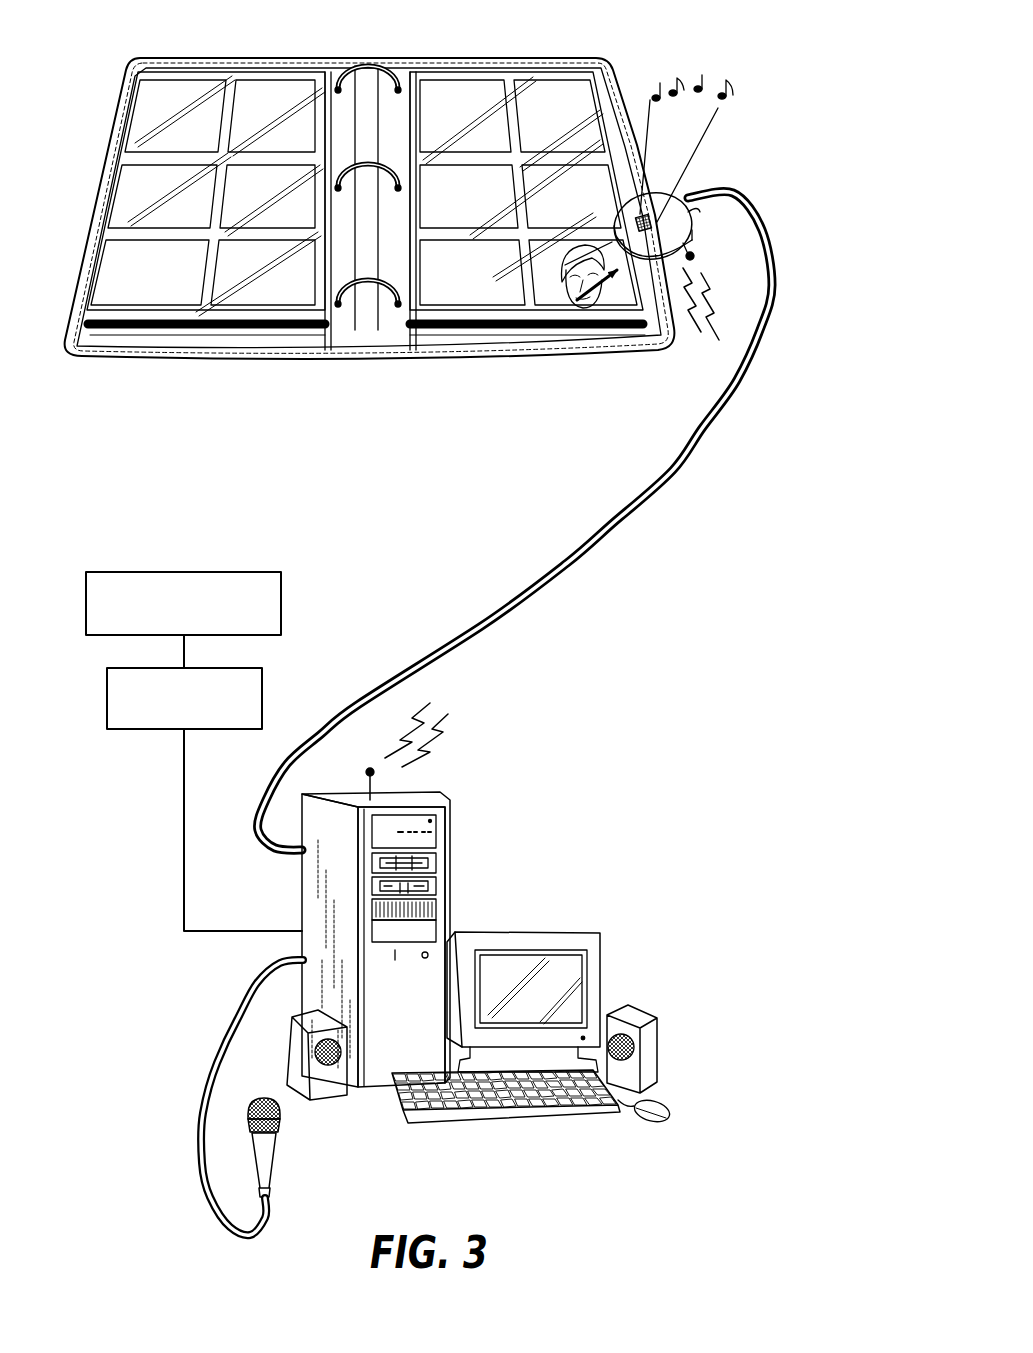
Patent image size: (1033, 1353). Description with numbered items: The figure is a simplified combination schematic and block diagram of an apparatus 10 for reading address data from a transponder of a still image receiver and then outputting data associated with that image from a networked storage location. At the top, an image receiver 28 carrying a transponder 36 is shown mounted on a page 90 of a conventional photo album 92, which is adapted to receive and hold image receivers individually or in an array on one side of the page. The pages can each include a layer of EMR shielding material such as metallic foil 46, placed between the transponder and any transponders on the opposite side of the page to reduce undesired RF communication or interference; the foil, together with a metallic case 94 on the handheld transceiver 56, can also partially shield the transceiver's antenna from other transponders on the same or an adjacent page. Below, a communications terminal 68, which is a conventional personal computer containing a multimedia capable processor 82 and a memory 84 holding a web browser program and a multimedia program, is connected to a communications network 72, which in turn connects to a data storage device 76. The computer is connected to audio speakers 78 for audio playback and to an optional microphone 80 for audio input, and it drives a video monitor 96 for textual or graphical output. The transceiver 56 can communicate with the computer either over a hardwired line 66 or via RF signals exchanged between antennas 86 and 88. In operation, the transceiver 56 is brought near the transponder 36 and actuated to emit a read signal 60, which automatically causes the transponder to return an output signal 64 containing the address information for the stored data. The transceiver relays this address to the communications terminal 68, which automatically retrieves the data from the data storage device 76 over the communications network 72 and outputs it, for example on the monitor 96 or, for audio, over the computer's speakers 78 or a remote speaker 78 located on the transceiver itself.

The apparatus 10 is at (650, 1198).
The image receiver 28 is at (556, 332).
The transponder 36 is at (556, 332).
The metallic foil 46 is at (232, 82).
The transceiver 56 is at (692, 207).
The read signal 60 is at (538, 325).
The output signal 64 is at (567, 247).
The hardwired line 66 is at (676, 474).
The communications terminal 68 is at (567, 838).
The communications network 72 is at (107, 700).
The data storage device 76 is at (128, 572).
The audio speakers 78 is at (682, 186).
The microphone 80 is at (276, 1176).
The multimedia capable processor 82 is at (427, 924).
The memory 84 is at (445, 807).
The antenna 86 is at (376, 776).
The antenna 88 is at (692, 254).
The page 90 is at (604, 90).
The photo album 92 is at (370, 221).
The metallic case 94 is at (700, 212).
The video monitor 96 is at (600, 932).